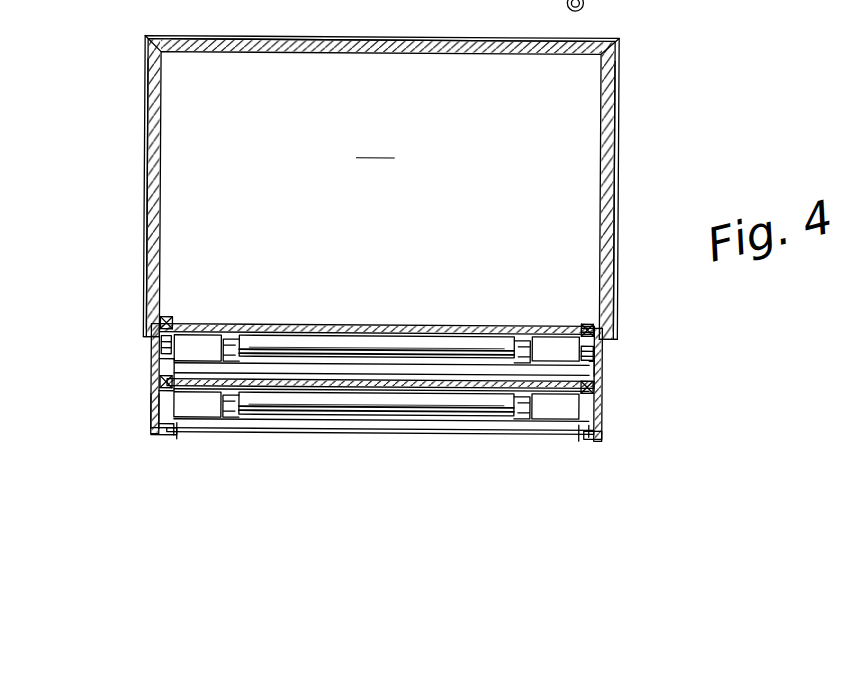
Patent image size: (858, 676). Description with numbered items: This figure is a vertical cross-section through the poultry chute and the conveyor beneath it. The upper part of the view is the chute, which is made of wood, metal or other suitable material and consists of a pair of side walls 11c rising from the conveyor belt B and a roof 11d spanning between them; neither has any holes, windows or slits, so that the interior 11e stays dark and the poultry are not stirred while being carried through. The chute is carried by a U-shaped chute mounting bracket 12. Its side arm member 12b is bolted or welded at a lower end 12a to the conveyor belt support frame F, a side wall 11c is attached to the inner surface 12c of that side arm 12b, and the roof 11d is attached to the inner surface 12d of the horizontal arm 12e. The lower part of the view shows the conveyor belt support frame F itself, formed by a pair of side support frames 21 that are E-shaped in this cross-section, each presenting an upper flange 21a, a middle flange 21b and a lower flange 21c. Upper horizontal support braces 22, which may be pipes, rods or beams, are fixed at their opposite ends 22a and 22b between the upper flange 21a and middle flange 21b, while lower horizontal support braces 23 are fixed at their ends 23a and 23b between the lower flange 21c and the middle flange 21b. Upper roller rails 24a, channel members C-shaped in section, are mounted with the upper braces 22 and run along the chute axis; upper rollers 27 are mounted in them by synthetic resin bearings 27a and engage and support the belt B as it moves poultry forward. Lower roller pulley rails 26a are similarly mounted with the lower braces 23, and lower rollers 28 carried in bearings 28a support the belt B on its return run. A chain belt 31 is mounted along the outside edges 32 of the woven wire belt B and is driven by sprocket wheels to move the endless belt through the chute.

The side walls 11c is at (147, 190).
The roof 11d is at (387, 37).
The interior 11e is at (375, 149).
The chute mounting bracket 12 is at (394, 172).
The lower end 12a is at (148, 337).
The side arm member 12b is at (143, 233).
The inner surface 12c is at (152, 146).
The inner surface 12d is at (315, 55).
The horizontal arm 12e is at (245, 36).
The side support frame 21 is at (377, 367).
The upper flange 21a is at (190, 330).
The middle flange 21b is at (155, 405).
The lower flange 21c is at (168, 433).
The upper horizontal support brace 22 is at (380, 339).
The end 22a is at (160, 365).
The end 22b is at (600, 376).
The lower horizontal support brace 23 is at (425, 441).
The end 23a is at (180, 436).
The end 23b is at (602, 440).
The upper roller rail 24a is at (200, 338).
The lower roller pulley rail 26a is at (240, 420).
The upper roller 27 is at (377, 318).
The bearing 27a is at (232, 344).
The lower roller 28 is at (387, 427).
The bearing 28a is at (280, 424).
The chain belt 31 is at (168, 318).
The outside edges 32 is at (172, 340).
The conveyor belt B is at (396, 326).
The conveyor belt support frame F is at (608, 357).